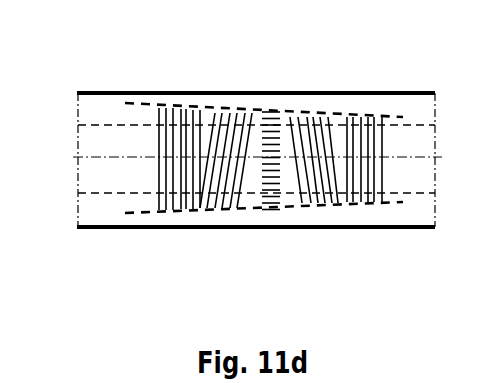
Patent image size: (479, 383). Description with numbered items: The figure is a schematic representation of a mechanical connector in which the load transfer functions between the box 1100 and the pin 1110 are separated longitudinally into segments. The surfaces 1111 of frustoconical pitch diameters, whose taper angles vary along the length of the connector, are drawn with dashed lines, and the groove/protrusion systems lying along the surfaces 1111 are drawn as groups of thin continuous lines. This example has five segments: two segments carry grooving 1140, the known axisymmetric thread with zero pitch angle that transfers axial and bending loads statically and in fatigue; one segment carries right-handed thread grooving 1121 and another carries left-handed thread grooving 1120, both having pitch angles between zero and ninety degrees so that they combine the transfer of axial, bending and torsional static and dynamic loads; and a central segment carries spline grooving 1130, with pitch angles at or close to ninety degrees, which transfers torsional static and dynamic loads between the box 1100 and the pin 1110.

The box 1100 is at (413, 92).
The pin 1110 is at (90, 91).
The surfaces of frustoconical pitch diameters 1111 is at (168, 110).
The grooving 1140 is at (362, 130).
The grooving 1121 is at (222, 210).
The spline grooving 1130 is at (267, 205).
The grooving 1120 is at (321, 205).